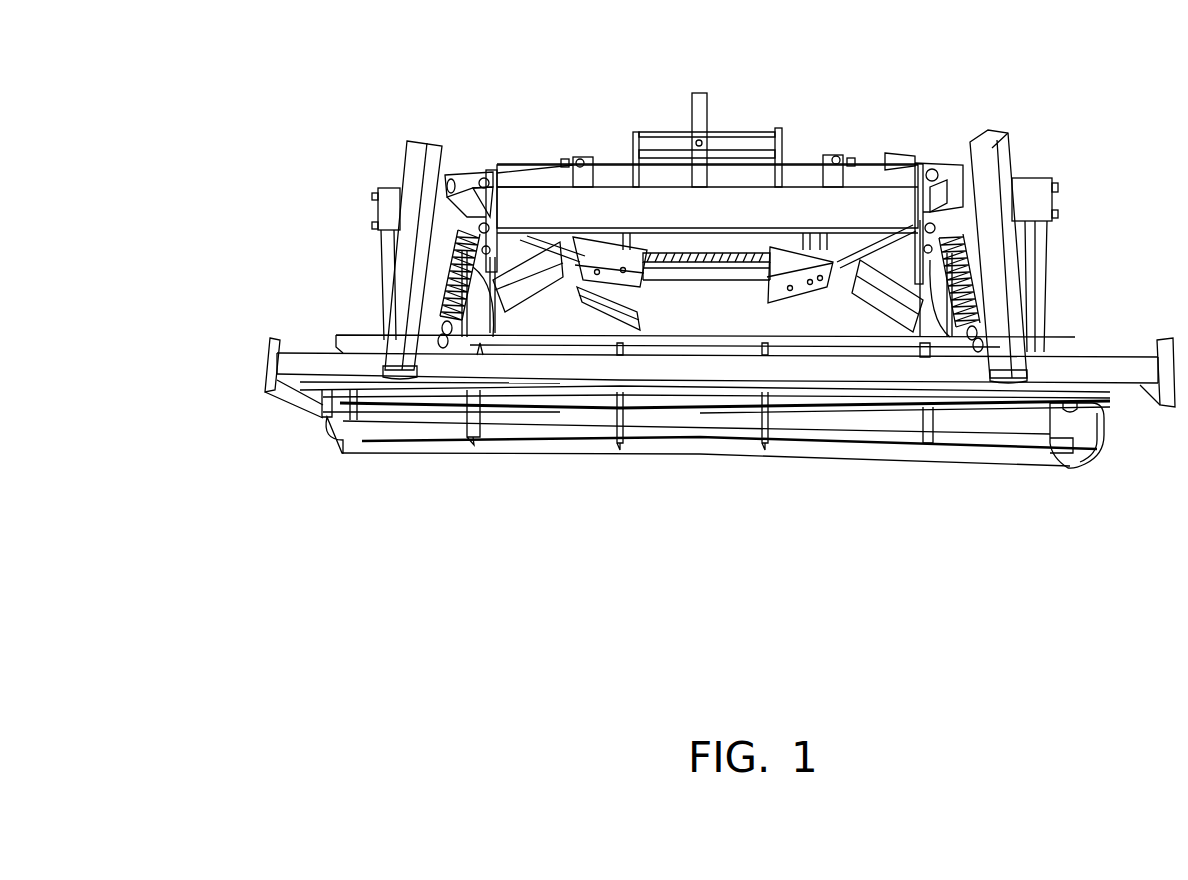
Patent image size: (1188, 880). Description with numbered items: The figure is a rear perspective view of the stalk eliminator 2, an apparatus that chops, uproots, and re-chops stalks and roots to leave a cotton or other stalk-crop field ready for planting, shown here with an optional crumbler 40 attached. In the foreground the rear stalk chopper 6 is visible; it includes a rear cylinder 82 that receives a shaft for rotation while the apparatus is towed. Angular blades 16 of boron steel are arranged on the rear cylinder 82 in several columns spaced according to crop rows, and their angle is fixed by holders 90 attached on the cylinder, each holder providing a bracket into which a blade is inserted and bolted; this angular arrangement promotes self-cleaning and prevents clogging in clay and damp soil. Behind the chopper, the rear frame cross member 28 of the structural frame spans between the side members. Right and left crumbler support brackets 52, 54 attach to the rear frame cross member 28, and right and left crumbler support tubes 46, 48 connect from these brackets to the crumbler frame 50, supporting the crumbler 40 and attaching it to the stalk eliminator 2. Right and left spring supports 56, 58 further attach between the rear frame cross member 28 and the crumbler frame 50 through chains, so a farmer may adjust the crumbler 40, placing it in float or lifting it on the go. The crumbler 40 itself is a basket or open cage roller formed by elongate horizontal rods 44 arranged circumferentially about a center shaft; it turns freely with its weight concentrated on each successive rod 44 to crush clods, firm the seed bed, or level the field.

The stalk eliminator 2 is at (560, 131).
The rear stalk chopper 6 is at (673, 304).
The blades 16 is at (615, 305).
The rear frame cross member 28 is at (802, 195).
The crumbler 40 is at (334, 447).
The elongate horizontal rods 44 is at (413, 445).
The right crumbler support tube 46 is at (1000, 250).
The left crumbler support tube 48 is at (409, 287).
The crumbler frame 50 is at (309, 365).
The right crumbler support bracket 52 is at (938, 187).
The left crumbler support bracket 54 is at (475, 195).
The right spring support 56 is at (960, 257).
The left spring support 58 is at (458, 255).
The rear cylinder 82 is at (713, 300).
The holders 90 is at (805, 285).